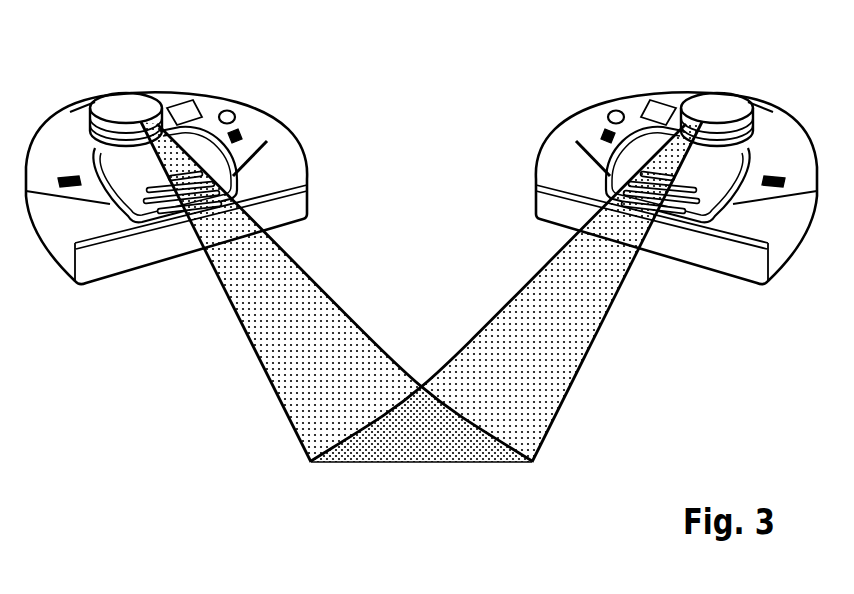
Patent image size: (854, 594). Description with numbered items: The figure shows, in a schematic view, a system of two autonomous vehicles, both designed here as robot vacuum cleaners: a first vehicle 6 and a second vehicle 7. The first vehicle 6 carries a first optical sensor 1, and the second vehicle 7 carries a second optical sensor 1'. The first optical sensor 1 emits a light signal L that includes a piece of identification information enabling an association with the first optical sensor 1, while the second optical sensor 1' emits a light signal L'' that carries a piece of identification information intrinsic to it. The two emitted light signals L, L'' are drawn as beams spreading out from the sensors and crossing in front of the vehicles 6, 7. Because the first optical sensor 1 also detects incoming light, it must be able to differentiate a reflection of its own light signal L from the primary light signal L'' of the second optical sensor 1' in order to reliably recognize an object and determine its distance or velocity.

The first optical sensor 1 is at (166, 160).
The second optical sensor 1' is at (676, 160).
The first vehicle 6 is at (257, 129).
The second vehicle 7 is at (586, 129).
The light signal L is at (336, 306).
The light signal L'' is at (506, 306).